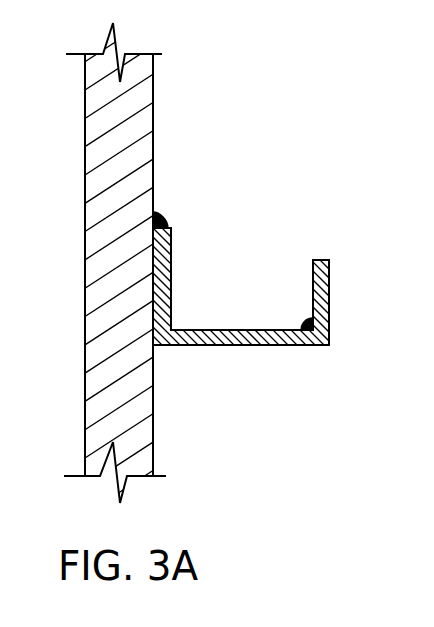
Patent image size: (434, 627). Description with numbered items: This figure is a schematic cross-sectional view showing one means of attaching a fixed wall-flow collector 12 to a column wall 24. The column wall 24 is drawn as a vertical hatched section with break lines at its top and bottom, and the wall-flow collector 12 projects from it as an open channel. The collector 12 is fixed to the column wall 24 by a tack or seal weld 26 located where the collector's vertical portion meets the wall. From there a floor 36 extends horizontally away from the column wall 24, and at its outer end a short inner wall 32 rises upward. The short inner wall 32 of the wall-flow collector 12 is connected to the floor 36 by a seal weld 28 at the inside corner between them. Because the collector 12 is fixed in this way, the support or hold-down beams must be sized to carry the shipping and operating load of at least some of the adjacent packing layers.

The wall-flow collector 12 is at (233, 288).
The column wall 24 is at (86, 174).
The tack or seal weld 26 is at (164, 215).
The seal weld 28 is at (303, 320).
The short inner wall 32 is at (330, 290).
The floor 36 is at (266, 345).